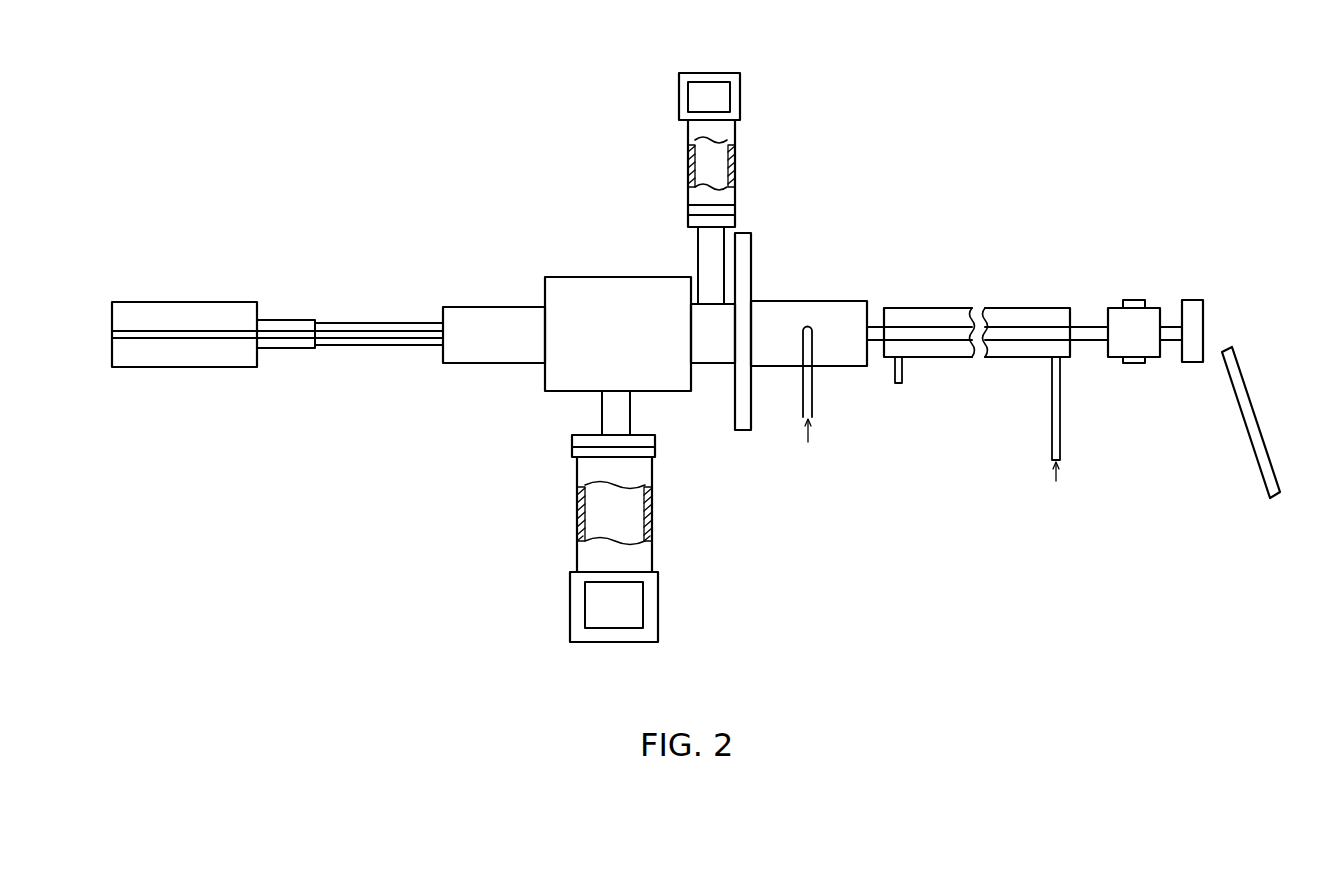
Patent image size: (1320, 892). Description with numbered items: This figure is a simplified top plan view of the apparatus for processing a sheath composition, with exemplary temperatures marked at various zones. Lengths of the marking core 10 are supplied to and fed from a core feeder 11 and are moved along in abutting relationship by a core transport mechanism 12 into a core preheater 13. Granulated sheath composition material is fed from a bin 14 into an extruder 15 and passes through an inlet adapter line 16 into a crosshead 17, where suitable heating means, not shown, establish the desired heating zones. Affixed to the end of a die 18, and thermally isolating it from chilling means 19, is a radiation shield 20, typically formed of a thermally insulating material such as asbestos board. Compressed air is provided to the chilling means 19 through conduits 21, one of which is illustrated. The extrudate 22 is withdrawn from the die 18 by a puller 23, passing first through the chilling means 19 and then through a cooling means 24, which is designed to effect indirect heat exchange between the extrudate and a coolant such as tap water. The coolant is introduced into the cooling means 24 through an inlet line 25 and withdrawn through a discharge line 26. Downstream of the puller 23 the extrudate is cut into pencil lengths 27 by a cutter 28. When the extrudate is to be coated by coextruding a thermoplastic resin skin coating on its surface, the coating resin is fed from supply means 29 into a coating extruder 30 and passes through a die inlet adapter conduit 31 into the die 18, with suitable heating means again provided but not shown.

The marking core 10 is at (392, 334).
The core feeder 11 is at (190, 358).
The core transport mechanism 12 is at (351, 346).
The core preheater 13 is at (447, 350).
The bin 14 is at (654, 589).
The extruder 15 is at (641, 556).
The inlet adapter line 16 is at (580, 422).
The crosshead 17 is at (557, 290).
The die 18 is at (725, 352).
The chilling means 19 is at (790, 340).
The radiation shield 20 is at (748, 245).
The conduit 21 is at (812, 403).
The extrudate 22 is at (969, 330).
The puller 23 is at (1122, 351).
The cooling means 24 is at (1021, 350).
The inlet line 25 is at (1061, 433).
The discharge line 26 is at (903, 382).
The pencil lengths 27 is at (1242, 404).
The cutter 28 is at (1200, 325).
The supply means 29 is at (715, 80).
The coating extruder 30 is at (728, 194).
The die inlet adapter conduit 31 is at (708, 267).